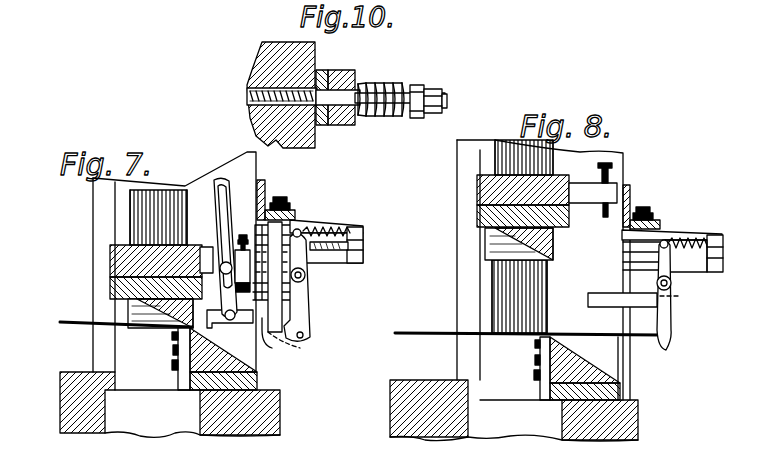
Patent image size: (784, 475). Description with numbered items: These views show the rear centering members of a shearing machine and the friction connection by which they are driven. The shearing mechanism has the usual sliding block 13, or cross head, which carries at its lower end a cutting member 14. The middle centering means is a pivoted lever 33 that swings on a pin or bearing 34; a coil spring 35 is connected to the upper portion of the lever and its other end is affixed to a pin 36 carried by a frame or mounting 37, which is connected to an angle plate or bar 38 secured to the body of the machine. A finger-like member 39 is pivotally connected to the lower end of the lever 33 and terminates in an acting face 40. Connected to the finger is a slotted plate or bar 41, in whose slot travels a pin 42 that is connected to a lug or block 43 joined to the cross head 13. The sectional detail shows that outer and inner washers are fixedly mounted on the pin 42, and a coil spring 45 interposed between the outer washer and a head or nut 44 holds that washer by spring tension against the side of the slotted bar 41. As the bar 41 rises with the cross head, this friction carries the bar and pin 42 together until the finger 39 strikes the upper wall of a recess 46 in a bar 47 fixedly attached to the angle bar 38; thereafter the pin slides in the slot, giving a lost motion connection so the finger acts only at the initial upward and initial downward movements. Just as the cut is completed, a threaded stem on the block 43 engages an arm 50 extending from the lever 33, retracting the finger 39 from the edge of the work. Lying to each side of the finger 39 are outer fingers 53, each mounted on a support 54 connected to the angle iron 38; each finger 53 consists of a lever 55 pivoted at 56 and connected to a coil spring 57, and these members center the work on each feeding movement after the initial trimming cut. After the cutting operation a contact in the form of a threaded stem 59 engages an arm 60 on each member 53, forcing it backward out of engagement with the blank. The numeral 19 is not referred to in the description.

In FIG. 7, the sliding block 13 is at (113, 250).
In FIG. 8, the sliding block 13 is at (478, 195).
In FIG. 7, the cutting member 14 is at (128, 301).
In FIG. 8, the cutting member 14 is at (490, 229).
In FIG. 7, the roller carrier 19 is at (243, 283).
In FIG. 7, the pivoted lever 33 is at (310, 308).
In FIG. 7, the pin or bearing 34 is at (306, 276).
In FIG. 7, the coil spring 35 is at (352, 228).
In FIG. 7, the pin 36 is at (365, 240).
In FIG. 7, the frame or mounting 37 is at (312, 222).
In FIG. 7, the angle plate or bar 38 is at (259, 186).
In FIG. 8, the angle plate or bar 38 is at (632, 198).
In FIG. 7, the finger-like member 39 is at (293, 328).
In FIG. 7, the acting face 40 is at (212, 324).
In FIG. 10, the slotted plate or bar 41 is at (334, 125).
In FIG. 7, the slotted plate or bar 41 is at (228, 191).
In FIG. 10, the pin 42 is at (398, 84).
In FIG. 7, the pin 42 is at (238, 238).
In FIG. 10, the lug or block 43 is at (262, 66).
In FIG. 7, the lug or block 43 is at (208, 256).
In FIG. 10, the head or nut 44 is at (443, 91).
In FIG. 10, the coil spring 45 is at (382, 118).
In FIG. 7, the recess 46 is at (302, 349).
In FIG. 7, the bar 47 is at (278, 236).
In FIG. 7, the arm 50 is at (278, 342).
In FIG. 8, the fingers 53 is at (672, 323).
In FIG. 8, the support 54 is at (665, 232).
In FIG. 8, the lever 55 is at (672, 302).
In FIG. 8, the pivot 56 is at (656, 283).
In FIG. 8, the coil spring 57 is at (702, 243).
In FIG. 8, the threaded stem 59 is at (612, 170).
In FIG. 8, the arm 60 is at (608, 307).